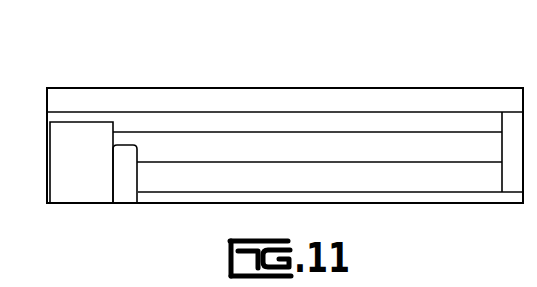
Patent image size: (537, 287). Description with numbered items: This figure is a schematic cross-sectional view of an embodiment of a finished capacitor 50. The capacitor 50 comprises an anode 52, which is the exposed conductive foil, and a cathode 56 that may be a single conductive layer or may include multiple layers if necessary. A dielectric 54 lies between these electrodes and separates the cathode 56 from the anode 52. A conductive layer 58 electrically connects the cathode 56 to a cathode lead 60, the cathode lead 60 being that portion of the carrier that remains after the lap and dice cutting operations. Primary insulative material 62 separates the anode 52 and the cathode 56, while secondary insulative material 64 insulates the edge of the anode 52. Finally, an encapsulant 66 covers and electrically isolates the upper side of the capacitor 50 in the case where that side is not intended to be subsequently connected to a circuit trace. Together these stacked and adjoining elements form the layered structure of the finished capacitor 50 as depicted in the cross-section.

The capacitor 50 is at (294, 71).
The anode 52 is at (378, 198).
The dielectric 54 is at (457, 173).
The cathode 56 is at (482, 150).
The conductive layer 58 is at (437, 120).
The cathode lead 60 is at (88, 183).
The primary insulative material 62 is at (123, 182).
The secondary insulative material 64 is at (518, 167).
The encapsulant 66 is at (182, 93).